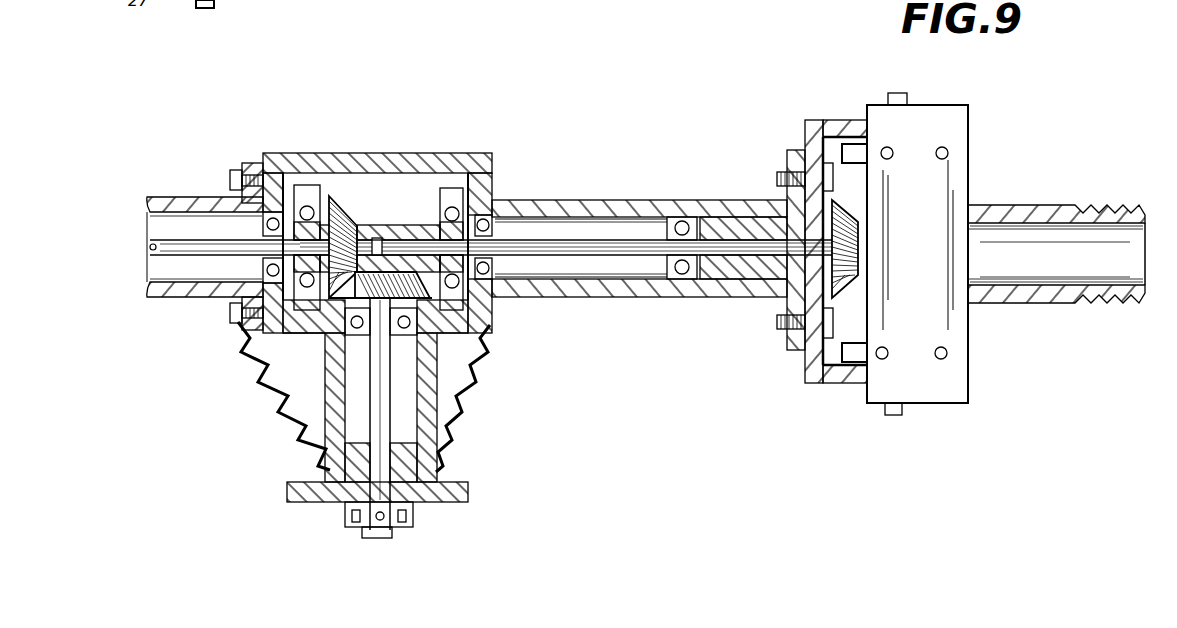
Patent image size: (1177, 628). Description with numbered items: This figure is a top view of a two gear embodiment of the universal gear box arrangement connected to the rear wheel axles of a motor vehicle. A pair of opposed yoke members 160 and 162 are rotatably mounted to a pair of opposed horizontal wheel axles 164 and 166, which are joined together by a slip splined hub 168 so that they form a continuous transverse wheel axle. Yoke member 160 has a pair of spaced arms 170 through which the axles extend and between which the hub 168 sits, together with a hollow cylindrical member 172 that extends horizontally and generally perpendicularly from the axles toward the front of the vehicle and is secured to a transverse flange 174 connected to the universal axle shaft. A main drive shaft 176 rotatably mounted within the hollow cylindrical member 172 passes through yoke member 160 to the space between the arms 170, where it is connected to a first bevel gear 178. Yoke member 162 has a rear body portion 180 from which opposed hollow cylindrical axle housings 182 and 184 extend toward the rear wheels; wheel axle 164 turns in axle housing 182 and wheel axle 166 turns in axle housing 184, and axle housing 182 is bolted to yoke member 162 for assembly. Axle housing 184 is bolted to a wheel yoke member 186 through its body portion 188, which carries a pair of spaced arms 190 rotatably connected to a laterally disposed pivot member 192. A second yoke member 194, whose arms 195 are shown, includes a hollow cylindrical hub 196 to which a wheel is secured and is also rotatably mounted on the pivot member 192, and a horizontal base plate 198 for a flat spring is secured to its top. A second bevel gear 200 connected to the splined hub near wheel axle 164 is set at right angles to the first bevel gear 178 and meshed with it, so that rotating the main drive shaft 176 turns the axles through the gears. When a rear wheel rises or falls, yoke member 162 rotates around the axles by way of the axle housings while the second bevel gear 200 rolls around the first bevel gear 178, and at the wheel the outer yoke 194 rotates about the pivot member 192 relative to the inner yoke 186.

The yoke member 160 is at (283, 343).
The yoke member 162 is at (323, 140).
The wheel axle 164 is at (150, 244).
The wheel axle 166 is at (562, 240).
The slip splined hub 168 is at (377, 236).
The spaced arms 170 is at (305, 197).
The hollow cylindrical member 172 is at (437, 370).
The transverse flange 174 is at (468, 490).
The main drive shaft 176 is at (382, 410).
The first bevel gear 178 is at (490, 295).
The rear body portion 180 is at (353, 153).
The axle housing 182 is at (170, 298).
The axle housing 184 is at (590, 297).
The wheel yoke member 186 is at (797, 120).
The body portion 188 is at (812, 340).
The spaced arms 190 is at (838, 120).
The pivot member 192 is at (893, 415).
The second yoke member 194 is at (990, 183).
The arms 195 is at (853, 150).
The hollow cylindrical hub 196 is at (1003, 303).
The horizontal base plate 198 is at (947, 353).
The second bevel gear 200 is at (350, 214).